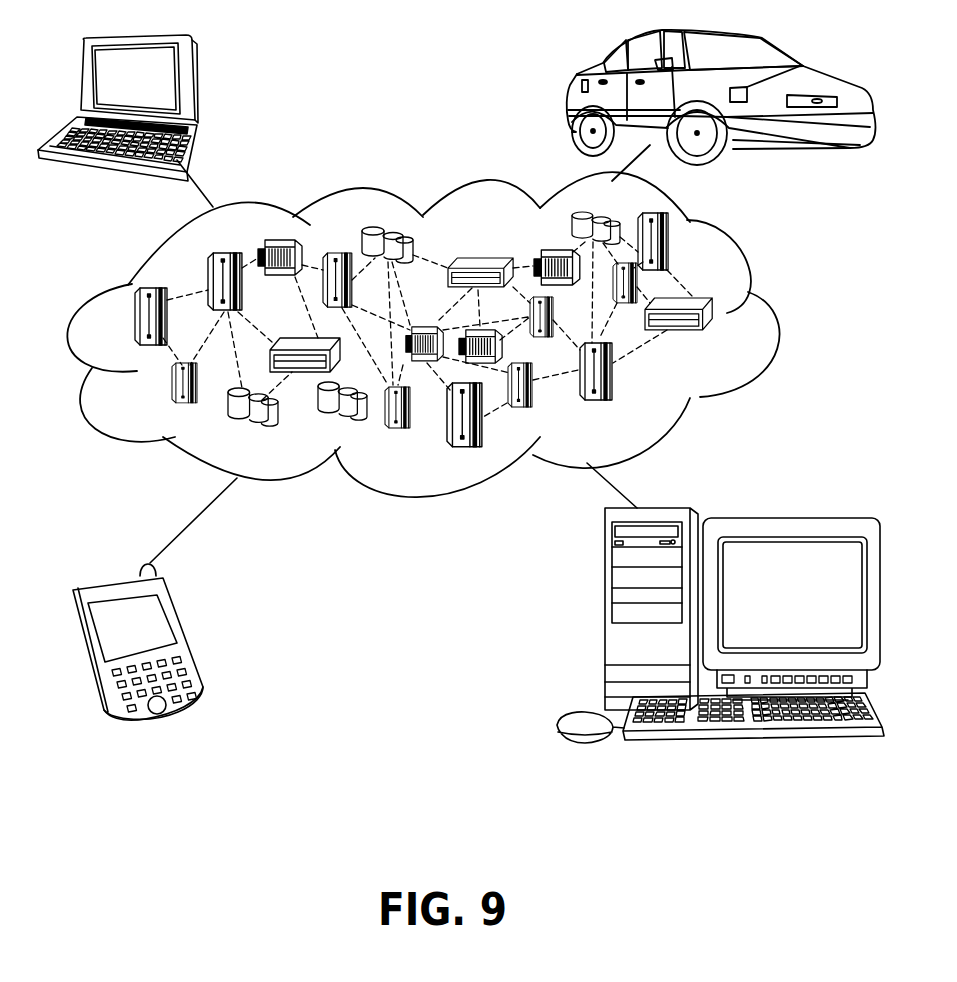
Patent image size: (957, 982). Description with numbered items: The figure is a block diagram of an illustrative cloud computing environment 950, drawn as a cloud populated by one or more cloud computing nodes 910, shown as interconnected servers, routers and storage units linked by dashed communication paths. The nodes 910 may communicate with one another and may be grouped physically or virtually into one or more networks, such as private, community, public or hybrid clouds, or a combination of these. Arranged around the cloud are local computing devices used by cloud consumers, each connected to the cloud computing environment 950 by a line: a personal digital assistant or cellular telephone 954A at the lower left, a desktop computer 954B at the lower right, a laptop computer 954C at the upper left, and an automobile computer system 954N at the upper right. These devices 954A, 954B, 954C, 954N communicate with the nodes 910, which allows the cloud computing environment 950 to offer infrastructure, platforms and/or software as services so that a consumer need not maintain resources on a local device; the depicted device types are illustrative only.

The cloud computing environment 950 is at (753, 277).
The cloud computing nodes 910 is at (732, 334).
The personal digital assistant (PDA) or cellular telephone 954A is at (183, 643).
The desktop computer 954B is at (604, 620).
The laptop computer 954C is at (193, 82).
The automobile computer system 954N is at (575, 76).